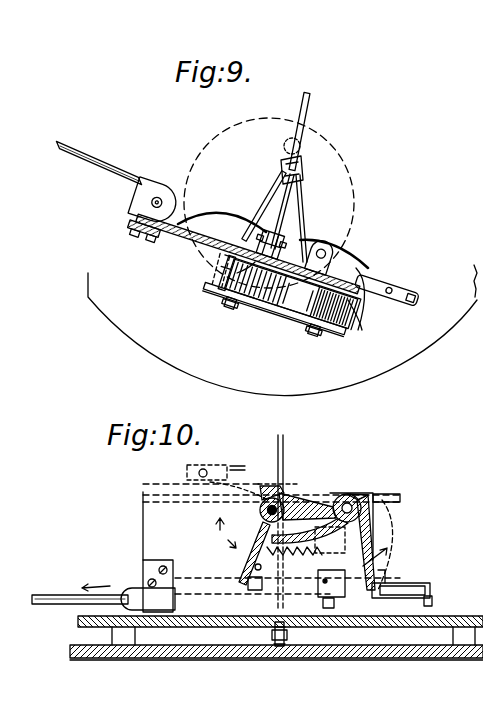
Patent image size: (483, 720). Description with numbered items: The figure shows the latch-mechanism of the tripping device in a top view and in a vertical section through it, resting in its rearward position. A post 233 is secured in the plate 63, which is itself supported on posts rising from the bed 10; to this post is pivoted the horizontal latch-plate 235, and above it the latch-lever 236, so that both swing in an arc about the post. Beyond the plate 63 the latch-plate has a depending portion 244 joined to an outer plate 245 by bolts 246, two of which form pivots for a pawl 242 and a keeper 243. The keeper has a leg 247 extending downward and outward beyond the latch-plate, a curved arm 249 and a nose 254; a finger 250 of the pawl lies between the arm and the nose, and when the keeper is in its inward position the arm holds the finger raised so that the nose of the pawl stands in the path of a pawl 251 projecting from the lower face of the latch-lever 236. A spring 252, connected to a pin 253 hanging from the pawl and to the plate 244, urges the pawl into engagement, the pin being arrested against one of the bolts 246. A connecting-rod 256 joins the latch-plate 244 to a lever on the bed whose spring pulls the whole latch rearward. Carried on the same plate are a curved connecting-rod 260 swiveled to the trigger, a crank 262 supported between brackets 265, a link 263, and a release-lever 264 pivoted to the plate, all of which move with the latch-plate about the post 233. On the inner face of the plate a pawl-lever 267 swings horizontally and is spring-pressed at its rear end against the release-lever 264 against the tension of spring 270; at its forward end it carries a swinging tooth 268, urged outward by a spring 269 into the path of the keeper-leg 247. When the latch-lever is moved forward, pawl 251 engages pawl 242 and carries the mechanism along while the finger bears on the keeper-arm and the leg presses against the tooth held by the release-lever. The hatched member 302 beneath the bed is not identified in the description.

In FIG. 9, the bed 10 is at (255, 283).
In FIG. 10, the bed 10 is at (263, 628).
In FIG. 10, the plate 63 is at (135, 507).
In FIG. 9, the post 233 is at (290, 150).
In FIG. 9, the latch-plate 235 is at (355, 193).
In FIG. 10, the latch-lever 236 is at (192, 476).
In FIG. 9, the pawl 242 is at (230, 282).
In FIG. 10, the pawl 242 is at (276, 497).
In FIG. 9, the keeper 243 is at (332, 303).
In FIG. 10, the keeper 243 is at (348, 497).
In FIG. 9, the depending portion of the latch-plate 244 is at (137, 212).
In FIG. 10, the depending portion of the latch-plate 244 is at (153, 544).
In FIG. 9, the outer plate 245 is at (214, 294).
In FIG. 9, the bolts 246 is at (236, 307).
In FIG. 10, the bolts 246 is at (258, 535).
In FIG. 9, the leg 247 is at (357, 330).
In FIG. 10, the leg 247 is at (388, 562).
In FIG. 10, the curved arm 249 is at (323, 540).
In FIG. 9, the finger 250 is at (290, 303).
In FIG. 10, the finger 250 is at (291, 504).
In FIG. 10, the pawl 251 is at (265, 472).
In FIG. 10, the spring 252 is at (270, 603).
In FIG. 9, the pin 253 is at (237, 273).
In FIG. 10, the pin 253 is at (248, 565).
In FIG. 10, the nose 254 is at (331, 500).
In FIG. 9, the connecting-rod 256 is at (90, 159).
In FIG. 10, the connecting-rod 256 is at (45, 593).
In FIG. 10, the curved connecting-rod 260 is at (283, 445).
In FIG. 9, the crank 262 is at (304, 113).
In FIG. 9, the link 263 is at (272, 214).
In FIG. 10, the link 263 is at (287, 642).
In FIG. 9, the release-lever 264 is at (258, 230).
In FIG. 10, the release-lever 264 is at (270, 637).
In FIG. 9, the brackets 265 is at (278, 208).
In FIG. 9, the pawl-lever 267 is at (291, 241).
In FIG. 9, the swinging tooth 268 is at (362, 307).
In FIG. 10, the swinging tooth 268 is at (430, 590).
In FIG. 9, the spring 269 is at (342, 258).
In FIG. 9, the spring 270 is at (187, 223).
In FIG. 10, the base plate 302 is at (75, 648).